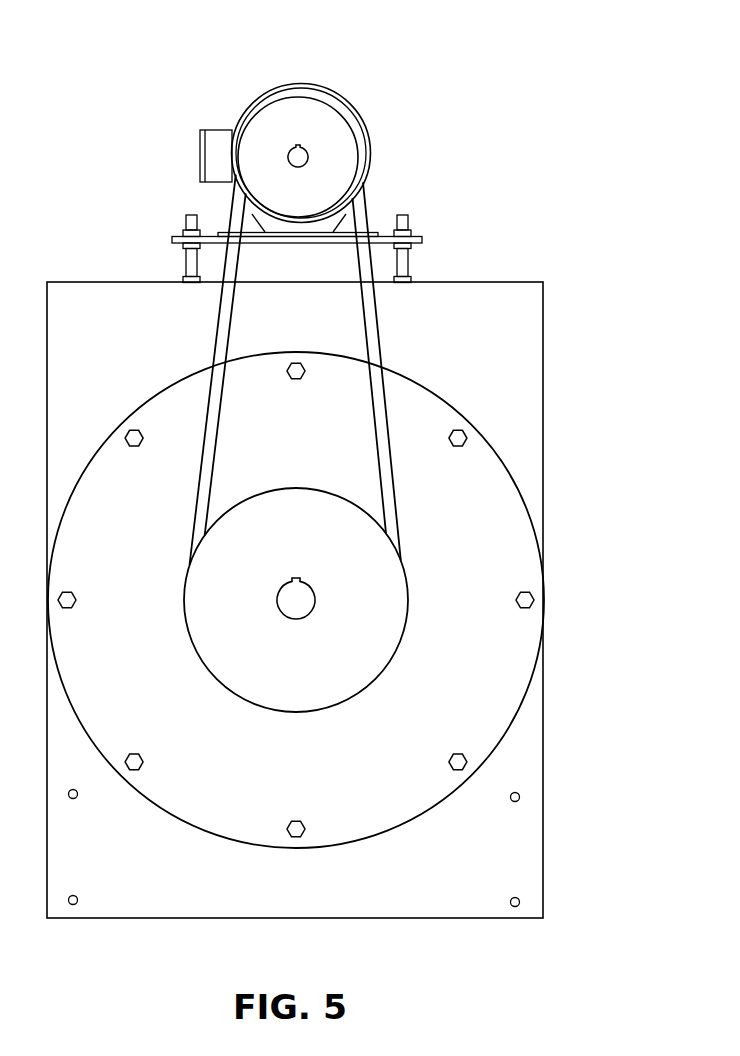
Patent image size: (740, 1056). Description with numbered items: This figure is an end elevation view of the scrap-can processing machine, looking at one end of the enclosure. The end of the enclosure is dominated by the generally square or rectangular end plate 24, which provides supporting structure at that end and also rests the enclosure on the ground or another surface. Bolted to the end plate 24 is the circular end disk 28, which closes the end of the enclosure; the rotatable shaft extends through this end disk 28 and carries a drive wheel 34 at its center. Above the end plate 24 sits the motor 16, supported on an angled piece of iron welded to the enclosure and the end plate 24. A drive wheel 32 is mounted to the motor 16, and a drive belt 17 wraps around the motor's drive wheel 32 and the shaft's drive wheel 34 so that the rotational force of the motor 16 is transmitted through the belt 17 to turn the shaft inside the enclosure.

The motor 16 is at (372, 135).
The drive belt 17 is at (218, 333).
The end plate 24 is at (543, 308).
The end disk 28 is at (500, 493).
The drive wheel 32 is at (298, 112).
The drive wheel 34 is at (281, 675).